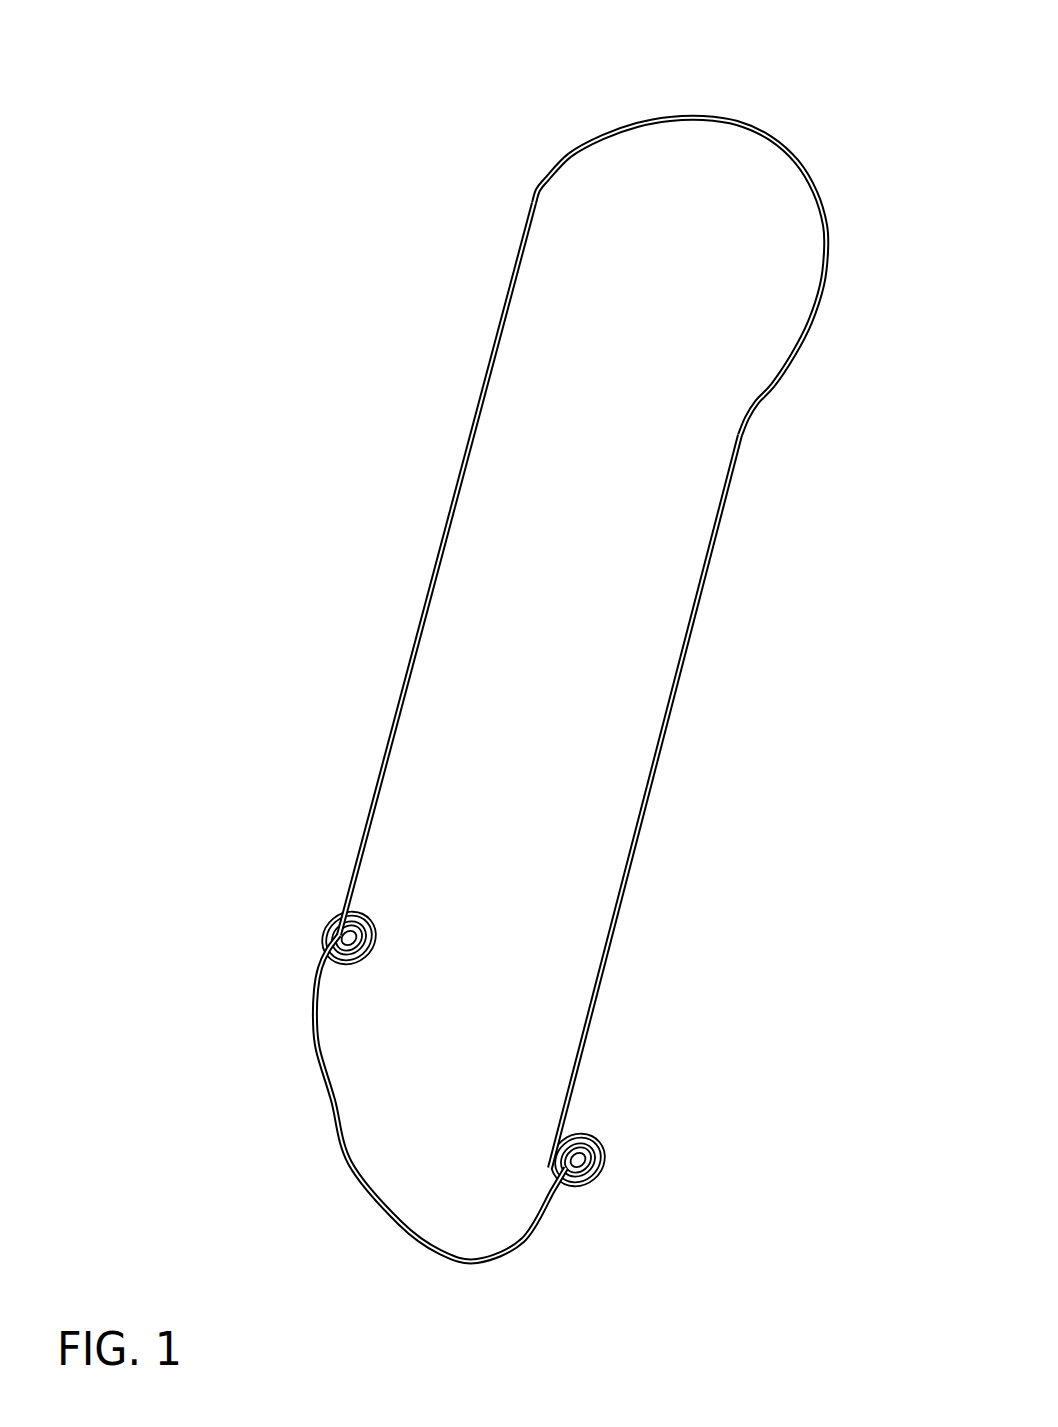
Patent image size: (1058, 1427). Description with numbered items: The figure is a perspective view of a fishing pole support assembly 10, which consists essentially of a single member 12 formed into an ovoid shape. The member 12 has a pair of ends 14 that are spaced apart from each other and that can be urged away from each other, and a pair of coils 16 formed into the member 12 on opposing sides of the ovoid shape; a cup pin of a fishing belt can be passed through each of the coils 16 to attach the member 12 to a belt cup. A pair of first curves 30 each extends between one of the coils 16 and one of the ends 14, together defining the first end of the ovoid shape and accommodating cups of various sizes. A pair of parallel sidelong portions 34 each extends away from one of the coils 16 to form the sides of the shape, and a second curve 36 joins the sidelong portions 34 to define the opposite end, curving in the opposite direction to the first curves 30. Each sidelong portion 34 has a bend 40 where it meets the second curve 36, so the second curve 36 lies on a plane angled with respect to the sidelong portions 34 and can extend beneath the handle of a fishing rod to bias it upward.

The fishing pole support assembly 10 is at (233, 303).
The member 12 is at (412, 518).
The ends 14 is at (358, 1283).
The coils 16 is at (368, 912).
The first curves 30 is at (312, 1125).
The sidelong portions 34 is at (385, 647).
The second curve 36 is at (729, 84).
The bend 40 is at (512, 172).